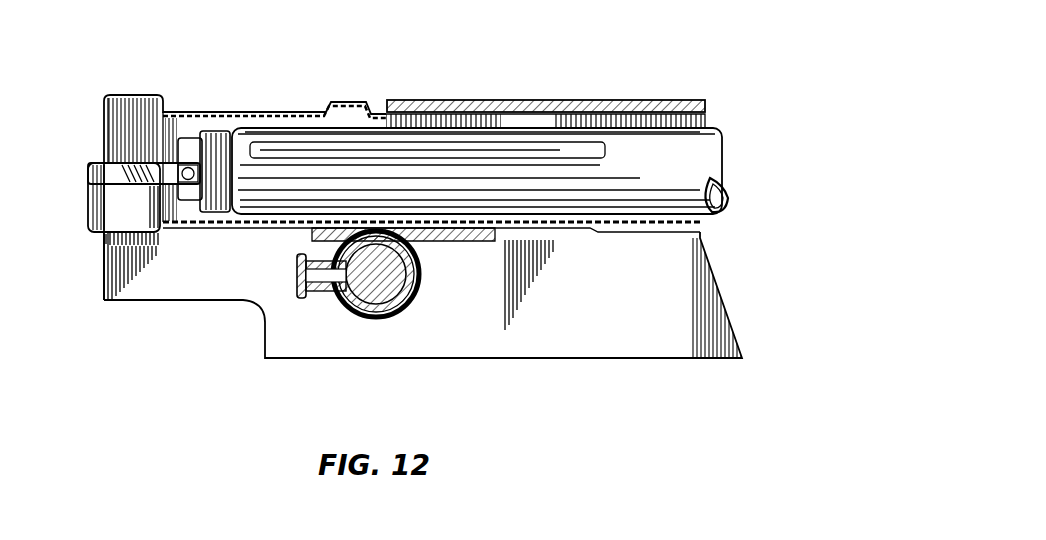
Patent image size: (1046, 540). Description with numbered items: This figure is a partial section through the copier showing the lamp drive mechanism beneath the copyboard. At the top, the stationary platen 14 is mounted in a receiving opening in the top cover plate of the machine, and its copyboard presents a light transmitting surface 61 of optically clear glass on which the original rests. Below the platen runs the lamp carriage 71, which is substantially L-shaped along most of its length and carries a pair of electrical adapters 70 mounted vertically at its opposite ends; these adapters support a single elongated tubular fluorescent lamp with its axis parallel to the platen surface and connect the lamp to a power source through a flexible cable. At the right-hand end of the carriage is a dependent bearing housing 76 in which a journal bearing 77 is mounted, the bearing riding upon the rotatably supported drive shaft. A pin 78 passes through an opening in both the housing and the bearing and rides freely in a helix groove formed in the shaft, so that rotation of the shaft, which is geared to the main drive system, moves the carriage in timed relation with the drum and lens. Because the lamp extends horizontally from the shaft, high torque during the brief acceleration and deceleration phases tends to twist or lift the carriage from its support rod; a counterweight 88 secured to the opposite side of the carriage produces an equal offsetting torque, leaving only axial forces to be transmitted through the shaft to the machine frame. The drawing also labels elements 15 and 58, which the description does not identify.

The stationary platen 14 is at (529, 88).
The barrel 15 is at (619, 136).
The guide rod 58 is at (400, 286).
The light transmitting surface 61 is at (456, 104).
The electrical adapters 70 is at (193, 146).
The lamp carriage 71 is at (241, 241).
The dependent bearing housing 76 is at (396, 306).
The journal bearing 77 is at (410, 262).
The pin 78 is at (322, 274).
The counterweight 88 is at (104, 228).